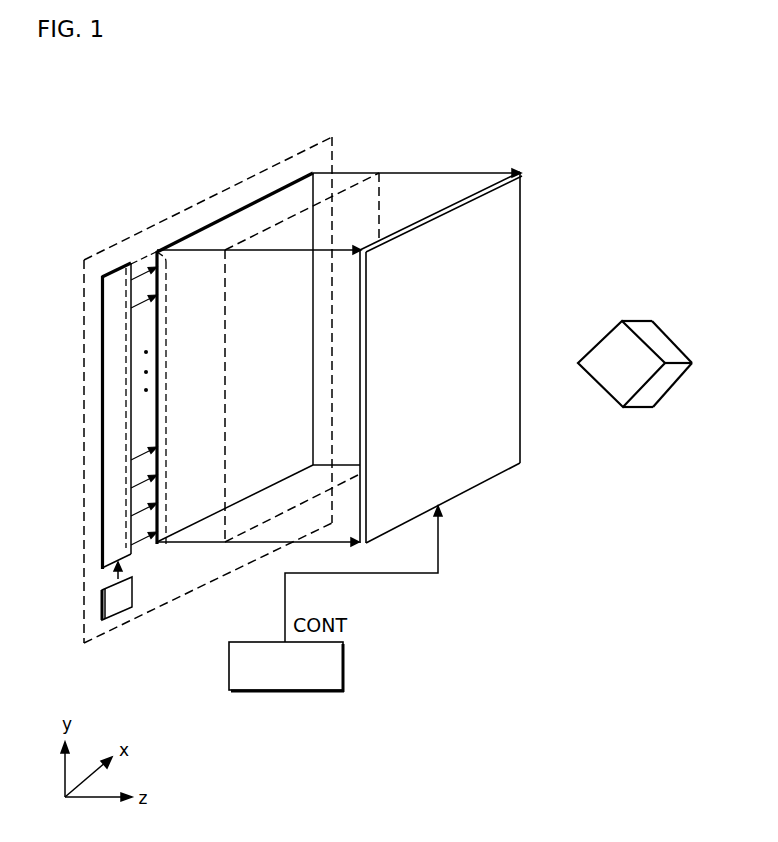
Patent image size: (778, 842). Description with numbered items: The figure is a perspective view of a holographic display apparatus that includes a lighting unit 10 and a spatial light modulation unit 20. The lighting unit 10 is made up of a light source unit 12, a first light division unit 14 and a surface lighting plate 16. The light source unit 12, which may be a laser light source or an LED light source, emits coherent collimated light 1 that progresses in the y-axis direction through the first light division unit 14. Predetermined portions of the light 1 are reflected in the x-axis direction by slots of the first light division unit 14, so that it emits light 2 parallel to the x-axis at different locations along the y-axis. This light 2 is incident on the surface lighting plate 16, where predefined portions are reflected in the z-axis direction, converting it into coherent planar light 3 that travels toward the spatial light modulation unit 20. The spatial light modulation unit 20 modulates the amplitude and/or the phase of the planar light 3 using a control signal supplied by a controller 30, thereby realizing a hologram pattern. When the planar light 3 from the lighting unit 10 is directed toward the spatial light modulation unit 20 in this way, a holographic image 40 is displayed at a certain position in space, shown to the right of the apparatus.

The collimated light 1 is at (104, 583).
The light 2 is at (143, 259).
The planar light 3 is at (352, 187).
The lighting unit 10 is at (84, 407).
The light source unit 12 is at (120, 614).
The first light division unit 14 is at (108, 273).
The surface lighting plate 16 is at (235, 211).
The spatial light modulation unit 20 is at (440, 210).
The controller 30 is at (346, 665).
The holographic image 40 is at (640, 410).